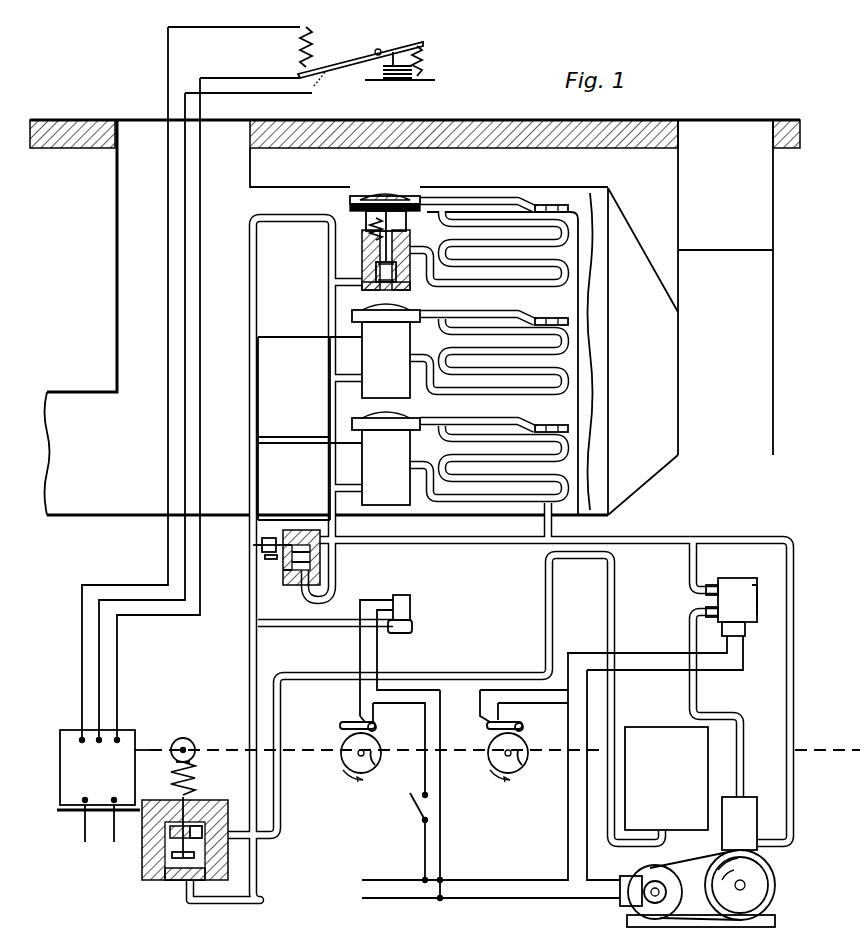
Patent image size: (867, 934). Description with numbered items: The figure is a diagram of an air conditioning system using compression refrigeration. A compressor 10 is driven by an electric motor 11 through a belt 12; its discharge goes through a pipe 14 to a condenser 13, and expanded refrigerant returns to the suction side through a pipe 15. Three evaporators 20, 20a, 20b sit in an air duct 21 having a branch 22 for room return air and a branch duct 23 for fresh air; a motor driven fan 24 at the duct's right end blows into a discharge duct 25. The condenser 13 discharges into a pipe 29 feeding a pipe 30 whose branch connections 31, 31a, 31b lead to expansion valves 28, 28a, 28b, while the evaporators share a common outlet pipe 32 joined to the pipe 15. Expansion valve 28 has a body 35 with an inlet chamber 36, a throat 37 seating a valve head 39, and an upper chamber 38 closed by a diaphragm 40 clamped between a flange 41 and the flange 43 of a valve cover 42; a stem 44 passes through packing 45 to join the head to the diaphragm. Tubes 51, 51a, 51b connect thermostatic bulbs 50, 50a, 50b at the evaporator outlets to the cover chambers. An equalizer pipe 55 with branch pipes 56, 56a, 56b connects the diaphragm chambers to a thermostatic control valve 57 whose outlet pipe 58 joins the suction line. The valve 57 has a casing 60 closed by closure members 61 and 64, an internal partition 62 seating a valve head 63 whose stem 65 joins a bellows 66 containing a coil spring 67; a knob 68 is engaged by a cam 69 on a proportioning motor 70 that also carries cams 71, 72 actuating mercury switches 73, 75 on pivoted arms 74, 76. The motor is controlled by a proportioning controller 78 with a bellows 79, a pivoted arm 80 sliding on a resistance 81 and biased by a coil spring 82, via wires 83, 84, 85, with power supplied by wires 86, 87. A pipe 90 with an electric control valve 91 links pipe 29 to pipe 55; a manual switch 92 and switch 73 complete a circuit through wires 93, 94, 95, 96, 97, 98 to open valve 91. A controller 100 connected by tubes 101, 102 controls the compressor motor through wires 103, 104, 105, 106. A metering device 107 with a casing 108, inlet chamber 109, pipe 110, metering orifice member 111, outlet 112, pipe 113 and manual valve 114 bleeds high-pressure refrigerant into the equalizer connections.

The compressor 10 is at (750, 825).
The electric motor 11 is at (655, 868).
The belt 12 is at (680, 862).
The condenser 13 is at (666, 778).
The pipe 14 is at (742, 746).
The pipe 15 is at (790, 678).
The evaporator 20 is at (538, 260).
The evaporator 20a is at (512, 420).
The evaporator 20b is at (506, 520).
The air duct 21 is at (570, 185).
The branch 22 is at (252, 165).
The branch duct 23 is at (60, 520).
The motor driven fan 24 is at (761, 349).
The discharge duct 25 is at (758, 195).
The expansion valve 28 is at (366, 234).
The expansion valve 28a is at (340, 360).
The expansion valve 28b is at (340, 470).
The pipe 29 is at (612, 600).
The pipe 30 is at (327, 414).
The branch connection 31 is at (342, 284).
The branch connection 31a is at (344, 390).
The branch connection 31b is at (344, 488).
The common outlet pipe 32 is at (592, 340).
The valve body 35 is at (416, 237).
The inlet chamber 36 is at (402, 289).
The throat 37 is at (362, 262).
The chamber 38 is at (410, 222).
The valve head 39 is at (386, 272).
The diaphragm 40 is at (350, 204).
The flange 41 is at (350, 209).
The valve cover 42 is at (393, 195).
The flange 43 is at (358, 196).
The stem 44 is at (370, 250).
The packing 45 is at (360, 238).
The thermostatic bulb 50 is at (540, 198).
The thermostatic bulb 50a is at (543, 318).
The thermostatic bulb 50b is at (543, 425).
The tube 51 is at (473, 198).
The tube 51a is at (496, 310).
The tube 51b is at (445, 428).
The pipe 55 is at (251, 410).
The branch pipe 56 is at (277, 222).
The branch pipe 56a is at (283, 338).
The branch pipe 56b is at (283, 445).
The thermostatic control valve 57 is at (164, 834).
The pipe 58 is at (442, 672).
The casing 60 is at (240, 848).
The closure member 61 is at (168, 882).
The internal partition 62 is at (228, 847).
The valve head 63 is at (180, 890).
The closure member 64 is at (204, 804).
The stem 65 is at (150, 837).
The bellows 66 is at (198, 773).
The coil spring 67 is at (170, 780).
The knob 68 is at (192, 762).
The cam 69 is at (183, 738).
The proportioning motor 70 is at (103, 770).
The cam 71 is at (371, 767).
The cam 72 is at (521, 767).
The mercury switch 73 is at (383, 713).
The pivoted arm 74 is at (380, 730).
The mercury switch 75 is at (528, 713).
The pivoted arm 76 is at (525, 730).
The proportioning controller 78 is at (363, 57).
The bellows 79 is at (393, 83).
The pivoted arm 80 is at (340, 78).
The electric resistance 81 is at (306, 52).
The coil spring 82 is at (420, 60).
The wire 83 is at (167, 298).
The wire 84 is at (187, 293).
The wire 85 is at (201, 362).
The wire 86 is at (84, 828).
The wire 87 is at (118, 828).
The pipe 90 is at (315, 630).
The electric control valve 91 is at (410, 588).
The manual switch 92 is at (412, 814).
The wire 93 is at (382, 880).
The wire 94 is at (425, 837).
The wire 95 is at (425, 767).
The wire 96 is at (360, 651).
The wire 97 is at (440, 740).
The wire 98 is at (385, 900).
The controller 100 is at (742, 583).
The tube 101 is at (697, 688).
The tube 102 is at (692, 572).
The wire 103 is at (506, 880).
The wire 104 is at (660, 650).
The wire 105 is at (663, 670).
The wire 106 is at (508, 902).
The metering device 107 is at (307, 562).
The casing 108 is at (290, 534).
The inlet chamber 109 is at (320, 555).
The pipe 110 is at (332, 580).
The metering orifice member 111 is at (315, 542).
The outlet 112 is at (280, 526).
The pipe 113 is at (258, 534).
The manual valve 114 is at (268, 562).